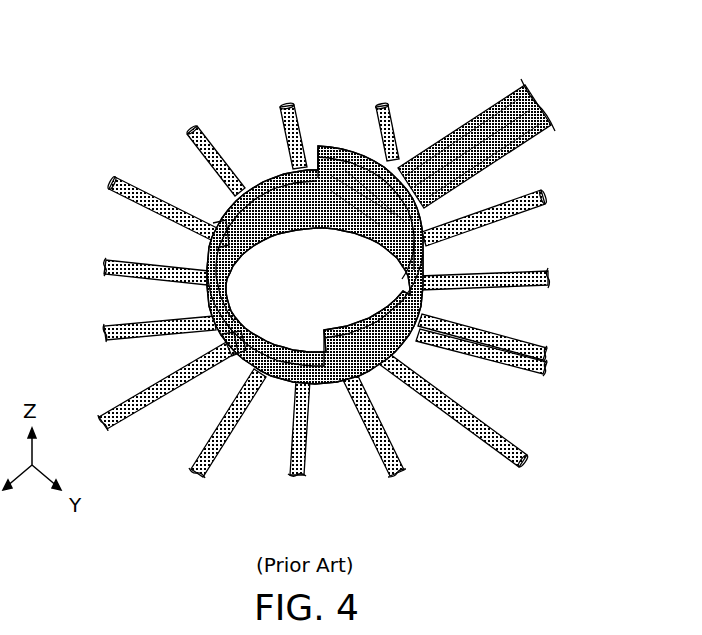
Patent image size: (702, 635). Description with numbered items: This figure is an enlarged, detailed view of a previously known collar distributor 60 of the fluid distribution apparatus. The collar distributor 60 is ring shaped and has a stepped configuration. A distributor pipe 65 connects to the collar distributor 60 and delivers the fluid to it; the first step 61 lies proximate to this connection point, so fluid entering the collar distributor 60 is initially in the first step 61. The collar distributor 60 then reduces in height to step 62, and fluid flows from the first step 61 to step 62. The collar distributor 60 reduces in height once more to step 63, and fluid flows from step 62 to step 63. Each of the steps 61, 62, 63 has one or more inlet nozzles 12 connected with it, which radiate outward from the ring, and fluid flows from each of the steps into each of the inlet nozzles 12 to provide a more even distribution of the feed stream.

The inlet nozzles 12 is at (297, 113).
The collar distributor 60 is at (287, 214).
The first step 61 is at (348, 146).
The step 62 is at (257, 186).
The step 63 is at (219, 338).
The distributor pipe 65 is at (492, 99).